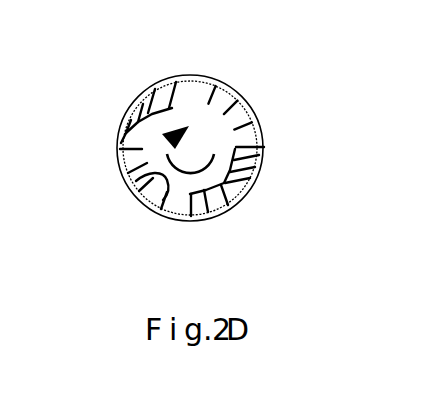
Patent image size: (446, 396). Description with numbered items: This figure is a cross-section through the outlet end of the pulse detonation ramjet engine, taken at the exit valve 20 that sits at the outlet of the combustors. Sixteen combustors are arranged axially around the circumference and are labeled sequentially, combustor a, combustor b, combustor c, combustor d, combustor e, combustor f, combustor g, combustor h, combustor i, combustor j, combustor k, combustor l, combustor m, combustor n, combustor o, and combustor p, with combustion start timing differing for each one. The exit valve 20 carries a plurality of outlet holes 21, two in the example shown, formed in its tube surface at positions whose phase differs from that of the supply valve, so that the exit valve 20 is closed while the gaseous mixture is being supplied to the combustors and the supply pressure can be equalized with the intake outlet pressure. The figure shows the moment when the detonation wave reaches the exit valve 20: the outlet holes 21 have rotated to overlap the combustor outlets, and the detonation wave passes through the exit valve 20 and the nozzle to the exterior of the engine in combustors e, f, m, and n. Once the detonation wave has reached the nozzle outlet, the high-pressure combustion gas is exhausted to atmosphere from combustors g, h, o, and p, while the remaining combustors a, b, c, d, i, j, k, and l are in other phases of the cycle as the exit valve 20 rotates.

The exit valve 20 is at (188, 149).
The outlet holes 21 is at (199, 147).
The combustor a is at (172, 83).
The combustor b is at (148, 91).
The combustor c is at (131, 106).
The combustor d is at (119, 130).
The combustor e is at (124, 160).
The combustor f is at (131, 182).
The combustor g is at (146, 203).
The combustor h is at (169, 214).
The combustor i is at (195, 215).
The combustor j is at (215, 212).
The combustor k is at (240, 198).
The combustor l is at (247, 175).
The combustor m is at (257, 134).
The combustor n is at (247, 112).
The combustor o is at (232, 91).
The combustor p is at (212, 82).